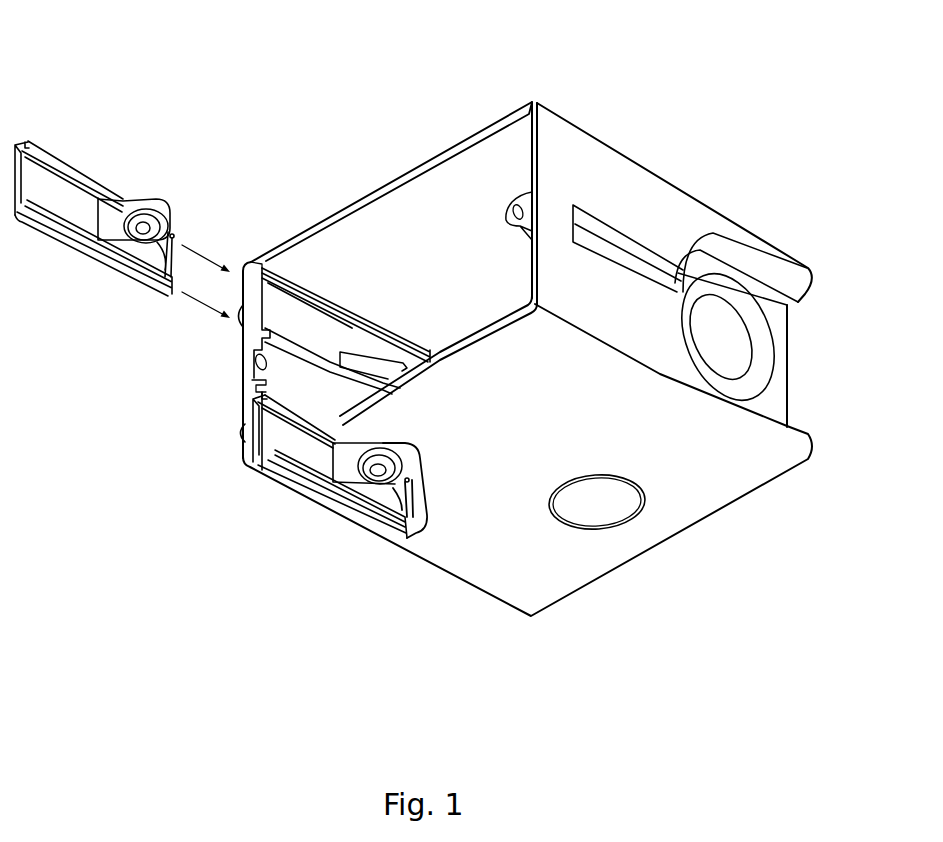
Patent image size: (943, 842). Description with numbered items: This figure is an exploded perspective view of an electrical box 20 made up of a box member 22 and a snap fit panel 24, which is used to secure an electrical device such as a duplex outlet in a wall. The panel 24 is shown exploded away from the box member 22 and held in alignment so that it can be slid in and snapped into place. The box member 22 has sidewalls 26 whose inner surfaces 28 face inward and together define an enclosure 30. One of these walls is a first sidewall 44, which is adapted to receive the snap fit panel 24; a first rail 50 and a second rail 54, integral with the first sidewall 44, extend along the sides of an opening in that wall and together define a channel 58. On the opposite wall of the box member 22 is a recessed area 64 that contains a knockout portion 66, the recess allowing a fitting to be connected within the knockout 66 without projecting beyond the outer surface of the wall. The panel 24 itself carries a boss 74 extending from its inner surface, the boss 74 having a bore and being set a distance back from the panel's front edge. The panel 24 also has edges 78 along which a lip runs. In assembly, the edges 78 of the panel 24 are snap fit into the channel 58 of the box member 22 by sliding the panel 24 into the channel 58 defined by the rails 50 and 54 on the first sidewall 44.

The electrical box 20 is at (190, 590).
The box member 22 is at (660, 115).
The snap fit panel 24 is at (152, 137).
The sidewalls 26 is at (596, 191).
The inner surfaces 28 is at (458, 255).
The enclosure 30 is at (392, 238).
The first sidewall 44 is at (243, 333).
The first rail 50 is at (264, 280).
The second rail 54 is at (300, 296).
The channel 58 is at (262, 307).
The recessed area 64 is at (778, 333).
The knockout portion 66 is at (736, 348).
The boss 74 is at (143, 203).
The edges 78 is at (72, 172).